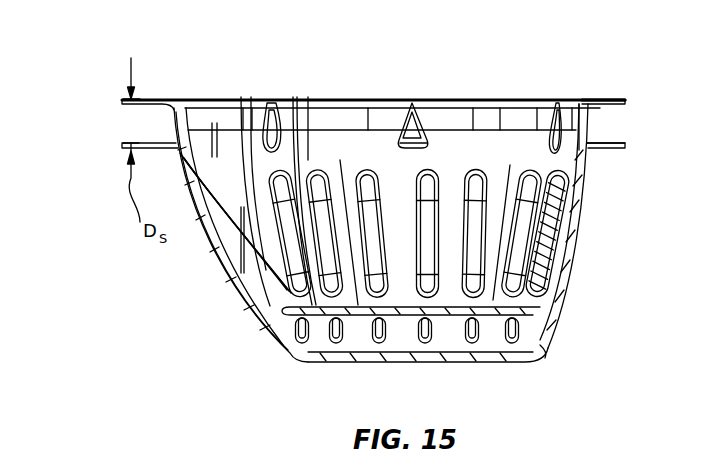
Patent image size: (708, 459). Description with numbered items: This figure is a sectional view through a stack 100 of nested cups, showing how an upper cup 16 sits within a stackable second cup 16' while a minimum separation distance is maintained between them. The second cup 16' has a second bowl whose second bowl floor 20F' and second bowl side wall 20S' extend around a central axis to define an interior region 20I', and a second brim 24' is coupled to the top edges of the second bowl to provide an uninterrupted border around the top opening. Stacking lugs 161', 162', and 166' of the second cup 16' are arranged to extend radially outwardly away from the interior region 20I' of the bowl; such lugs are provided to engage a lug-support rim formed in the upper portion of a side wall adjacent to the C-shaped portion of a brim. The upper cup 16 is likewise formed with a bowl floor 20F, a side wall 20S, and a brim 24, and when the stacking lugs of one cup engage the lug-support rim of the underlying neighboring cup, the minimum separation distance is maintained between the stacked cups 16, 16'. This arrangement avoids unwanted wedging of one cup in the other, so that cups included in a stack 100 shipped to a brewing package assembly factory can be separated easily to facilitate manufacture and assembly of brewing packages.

The stack of cups 100 is at (228, 57).
The stacking lug 162' is at (300, 106).
The stacking lug 161' is at (390, 97).
The stackable second cup 16' is at (568, 87).
The interior region of second bowl 20I' is at (494, 101).
The second brim 24' is at (622, 71).
The stacking lug 166' is at (615, 127).
The brim 24 is at (616, 159).
The second bowl floor 20F' is at (418, 234).
The second bowl side wall 20S' is at (235, 238).
The side wall 20S is at (232, 239).
The bowl floor 20F is at (415, 349).
The cup 16 is at (549, 387).